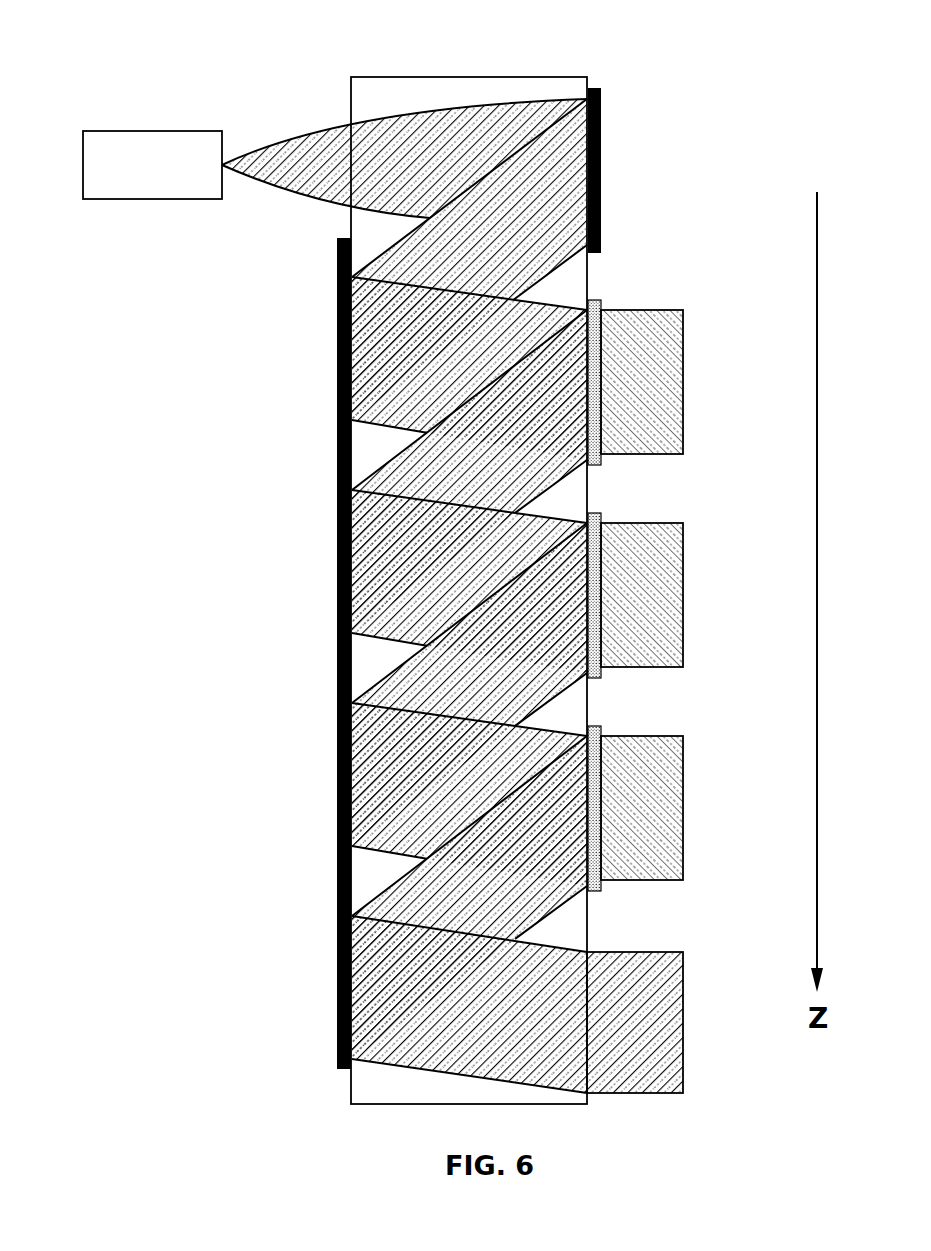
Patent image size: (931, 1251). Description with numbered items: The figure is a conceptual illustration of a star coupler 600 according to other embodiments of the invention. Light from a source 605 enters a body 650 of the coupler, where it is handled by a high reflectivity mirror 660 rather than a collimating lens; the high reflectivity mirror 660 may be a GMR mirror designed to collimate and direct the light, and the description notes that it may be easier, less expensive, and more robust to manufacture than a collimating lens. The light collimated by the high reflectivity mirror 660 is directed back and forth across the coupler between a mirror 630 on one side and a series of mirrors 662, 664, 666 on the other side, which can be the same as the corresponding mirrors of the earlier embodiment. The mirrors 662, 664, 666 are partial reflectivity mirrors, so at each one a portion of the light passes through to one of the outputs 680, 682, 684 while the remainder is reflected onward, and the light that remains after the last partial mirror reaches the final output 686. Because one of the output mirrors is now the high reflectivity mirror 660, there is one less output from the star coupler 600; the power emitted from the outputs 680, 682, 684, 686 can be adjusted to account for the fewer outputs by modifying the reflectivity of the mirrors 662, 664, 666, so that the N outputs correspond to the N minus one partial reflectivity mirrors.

The star coupler 600 is at (498, 552).
The light source 605 is at (153, 142).
The mirror 630 is at (337, 575).
The light guide 650 is at (503, 77).
The high reflectivity mirror 660 is at (603, 228).
The mirror 662 is at (592, 447).
The mirror 664 is at (592, 660).
The mirror 666 is at (592, 866).
The output 680 is at (668, 382).
The output 682 is at (668, 595).
The output 684 is at (668, 806).
The output 686 is at (668, 1020).